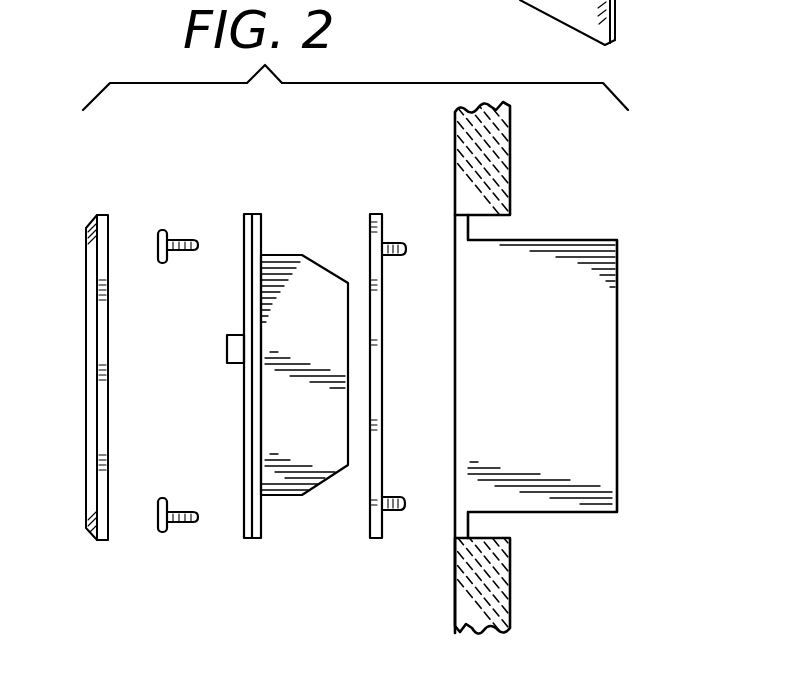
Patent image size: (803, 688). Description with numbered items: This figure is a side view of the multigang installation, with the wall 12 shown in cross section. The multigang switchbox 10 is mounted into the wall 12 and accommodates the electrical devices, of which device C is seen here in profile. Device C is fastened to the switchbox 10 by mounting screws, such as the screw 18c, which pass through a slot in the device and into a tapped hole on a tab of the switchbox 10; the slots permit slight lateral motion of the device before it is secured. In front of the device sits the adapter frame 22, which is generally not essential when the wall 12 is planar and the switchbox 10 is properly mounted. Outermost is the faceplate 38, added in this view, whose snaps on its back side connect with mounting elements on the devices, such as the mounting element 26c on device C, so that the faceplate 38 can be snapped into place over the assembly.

The multigang switchbox 10 is at (600, 315).
The wall 12 is at (493, 152).
The faceplate 38 is at (97, 540).
The screw 18c is at (192, 240).
The mounting element 26c is at (258, 215).
The device C is at (243, 547).
The adapter frame 22 is at (376, 540).